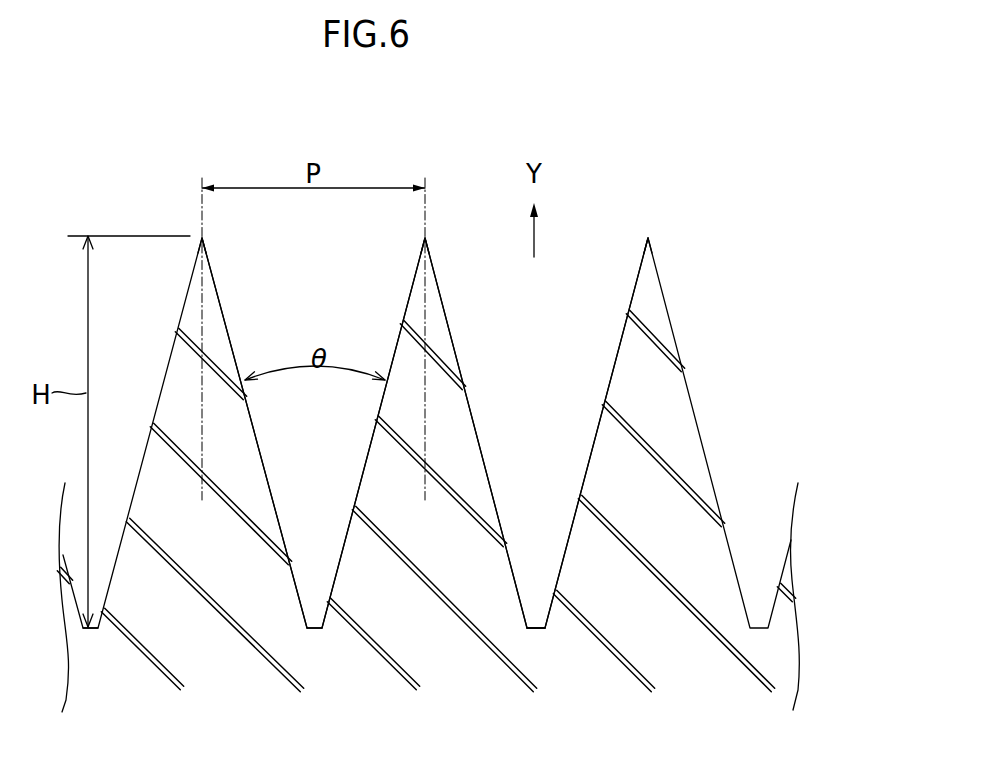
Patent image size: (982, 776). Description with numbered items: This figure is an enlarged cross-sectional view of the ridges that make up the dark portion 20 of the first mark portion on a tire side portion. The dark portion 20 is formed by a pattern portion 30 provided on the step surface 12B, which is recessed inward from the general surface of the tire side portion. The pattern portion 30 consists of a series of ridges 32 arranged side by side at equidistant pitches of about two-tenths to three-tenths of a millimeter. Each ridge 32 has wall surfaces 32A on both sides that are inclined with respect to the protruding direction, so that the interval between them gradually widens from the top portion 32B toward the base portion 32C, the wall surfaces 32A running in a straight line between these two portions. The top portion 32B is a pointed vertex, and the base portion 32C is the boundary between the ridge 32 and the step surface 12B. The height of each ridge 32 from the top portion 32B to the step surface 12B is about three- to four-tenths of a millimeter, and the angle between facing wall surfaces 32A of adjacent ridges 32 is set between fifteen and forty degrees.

The step surface 12B is at (96, 626).
The dark portion 20 is at (770, 285).
The pattern portion 30 is at (747, 393).
The ridge 32 is at (189, 287).
The wall surface 32A is at (223, 311).
The top portion 32B is at (206, 237).
The base portion 32C is at (542, 630).